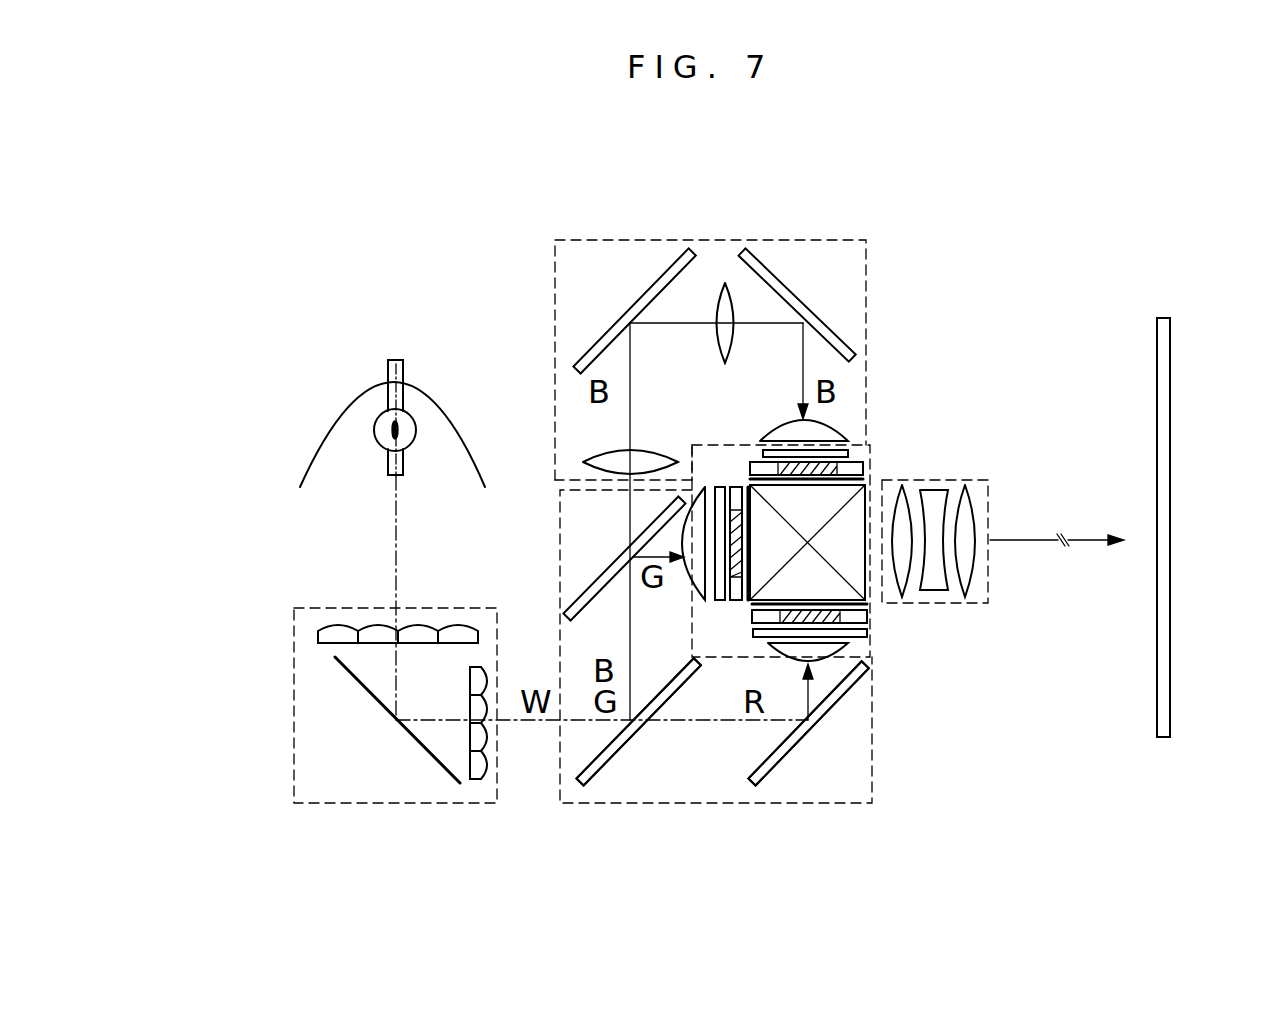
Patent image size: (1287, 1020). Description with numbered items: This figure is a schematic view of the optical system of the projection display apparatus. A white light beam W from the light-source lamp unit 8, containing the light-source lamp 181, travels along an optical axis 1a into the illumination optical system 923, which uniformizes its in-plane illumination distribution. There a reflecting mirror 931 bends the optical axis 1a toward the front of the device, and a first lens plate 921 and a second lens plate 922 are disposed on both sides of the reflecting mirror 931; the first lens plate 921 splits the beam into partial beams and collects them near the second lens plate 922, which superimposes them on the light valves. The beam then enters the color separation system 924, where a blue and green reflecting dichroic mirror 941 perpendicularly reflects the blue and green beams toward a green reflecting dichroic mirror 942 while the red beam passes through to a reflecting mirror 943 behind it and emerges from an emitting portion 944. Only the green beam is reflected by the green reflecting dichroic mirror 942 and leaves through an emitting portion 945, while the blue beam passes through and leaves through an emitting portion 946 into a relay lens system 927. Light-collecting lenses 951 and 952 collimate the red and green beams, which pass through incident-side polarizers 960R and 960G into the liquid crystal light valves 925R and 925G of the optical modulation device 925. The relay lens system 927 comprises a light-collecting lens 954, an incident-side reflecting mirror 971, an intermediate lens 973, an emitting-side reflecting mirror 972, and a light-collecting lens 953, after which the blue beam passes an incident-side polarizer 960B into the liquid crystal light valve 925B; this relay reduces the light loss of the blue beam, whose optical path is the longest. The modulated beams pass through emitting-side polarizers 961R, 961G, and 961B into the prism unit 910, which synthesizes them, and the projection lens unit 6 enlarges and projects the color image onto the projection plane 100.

The light-source lamp unit 8 is at (342, 402).
The light-source lamp 181 is at (380, 413).
The optical axis 1a is at (396, 558).
The first lens plate 921 is at (318, 638).
The second lens plate 922 is at (478, 780).
The illumination optical system 923 is at (295, 728).
The reflecting mirror 931 is at (428, 753).
The relay lens system 927 is at (572, 240).
The emitting portion for the blue beam 946 is at (612, 480).
The light-collecting lens 952 is at (688, 490).
The light-collecting lens 953 is at (845, 420).
The light-collecting lens 954 is at (595, 450).
The incident-side reflecting mirror 971 is at (597, 337).
The emitting-side reflecting mirror 972 is at (793, 293).
The intermediate lens 973 is at (724, 283).
The color separation system 924 is at (872, 785).
The optical modulation device 925 is at (748, 603).
The blue and green reflecting dichroic mirror 941 is at (593, 780).
The green reflecting dichroic mirror 942 is at (602, 579).
The reflecting mirror 943 is at (770, 778).
The emitting portion for the red beam 944 is at (860, 662).
The emitting portion for the green beam 945 is at (687, 573).
The light-collecting lens 951 is at (863, 655).
The incident-side polarizer 960G is at (682, 540).
The liquid crystal light valve 925G is at (734, 485).
The emitting-side polarizer 961G is at (742, 635).
The prism unit 910 is at (864, 468).
The emitting-side polarizer 961B is at (866, 482).
The liquid crystal light valve 925B is at (852, 454).
The incident-side polarizer 960B is at (852, 440).
The emitting-side polarizer 961R is at (868, 612).
The liquid crystal light valve 925R is at (868, 632).
The incident-side polarizer 960R is at (866, 645).
The projection lens unit 6 is at (990, 482).
The projection plane 100 is at (1170, 340).